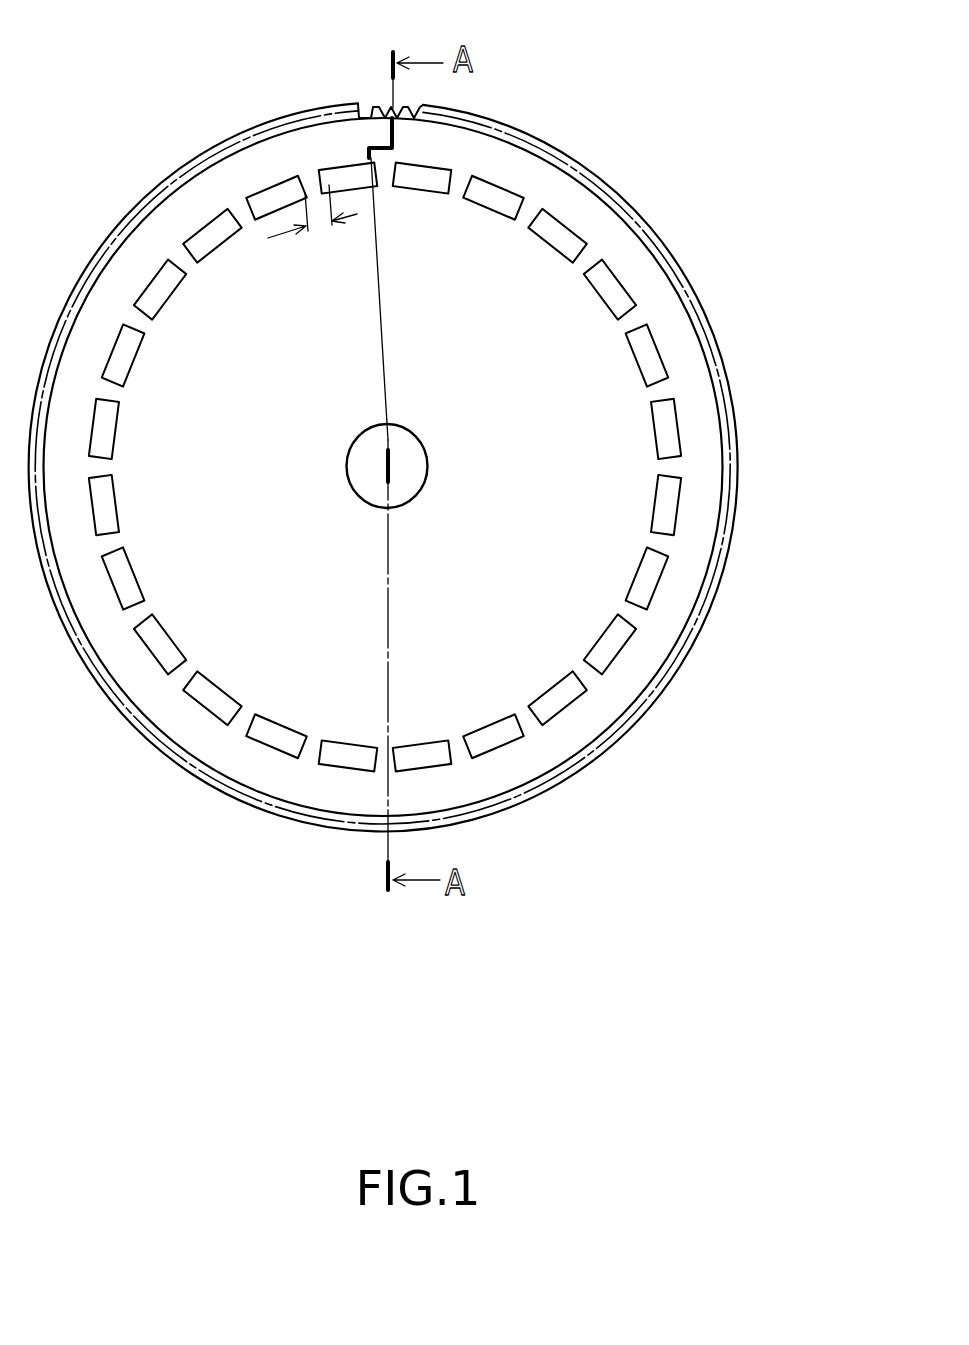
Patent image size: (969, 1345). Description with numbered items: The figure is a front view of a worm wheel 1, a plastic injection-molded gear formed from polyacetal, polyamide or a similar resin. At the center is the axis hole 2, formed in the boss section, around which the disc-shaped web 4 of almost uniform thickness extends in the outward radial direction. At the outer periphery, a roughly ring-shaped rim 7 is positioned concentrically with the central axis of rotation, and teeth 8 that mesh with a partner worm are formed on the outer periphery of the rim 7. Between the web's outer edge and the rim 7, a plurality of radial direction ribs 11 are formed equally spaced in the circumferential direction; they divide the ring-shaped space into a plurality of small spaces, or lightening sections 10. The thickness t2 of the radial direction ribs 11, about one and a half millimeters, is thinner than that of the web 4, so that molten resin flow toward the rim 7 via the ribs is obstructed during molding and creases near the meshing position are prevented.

The worm wheel 1 is at (627, 101).
The axis hole 2 is at (430, 463).
The web 4 is at (620, 402).
The rim 7 is at (623, 260).
The teeth 8 is at (404, 103).
The small spaces (lightening sections) 10 is at (345, 173).
The radial direction ribs 11 is at (307, 180).
The thickness of the radial direction ribs t2 is at (312, 243).